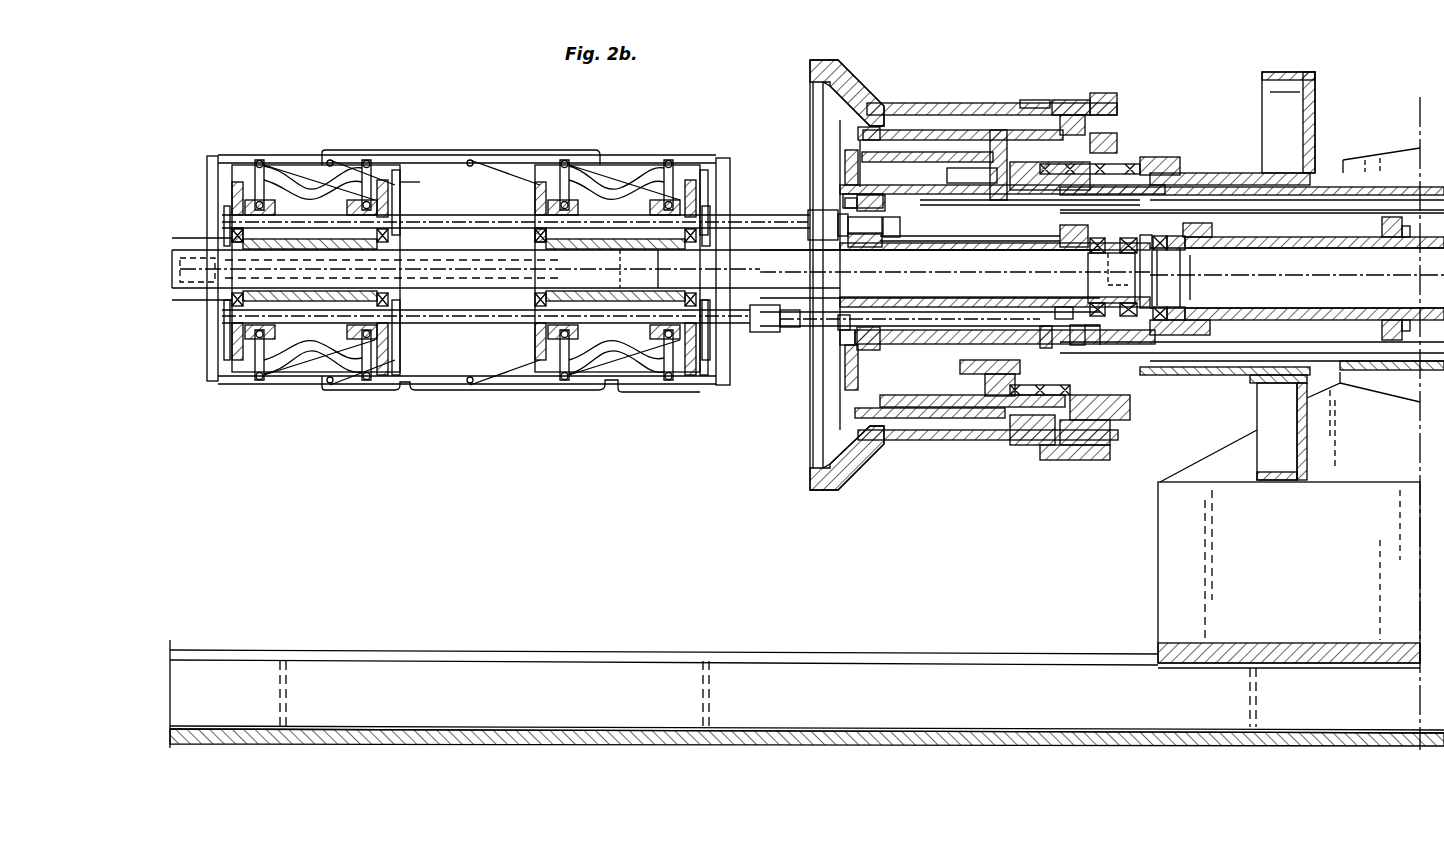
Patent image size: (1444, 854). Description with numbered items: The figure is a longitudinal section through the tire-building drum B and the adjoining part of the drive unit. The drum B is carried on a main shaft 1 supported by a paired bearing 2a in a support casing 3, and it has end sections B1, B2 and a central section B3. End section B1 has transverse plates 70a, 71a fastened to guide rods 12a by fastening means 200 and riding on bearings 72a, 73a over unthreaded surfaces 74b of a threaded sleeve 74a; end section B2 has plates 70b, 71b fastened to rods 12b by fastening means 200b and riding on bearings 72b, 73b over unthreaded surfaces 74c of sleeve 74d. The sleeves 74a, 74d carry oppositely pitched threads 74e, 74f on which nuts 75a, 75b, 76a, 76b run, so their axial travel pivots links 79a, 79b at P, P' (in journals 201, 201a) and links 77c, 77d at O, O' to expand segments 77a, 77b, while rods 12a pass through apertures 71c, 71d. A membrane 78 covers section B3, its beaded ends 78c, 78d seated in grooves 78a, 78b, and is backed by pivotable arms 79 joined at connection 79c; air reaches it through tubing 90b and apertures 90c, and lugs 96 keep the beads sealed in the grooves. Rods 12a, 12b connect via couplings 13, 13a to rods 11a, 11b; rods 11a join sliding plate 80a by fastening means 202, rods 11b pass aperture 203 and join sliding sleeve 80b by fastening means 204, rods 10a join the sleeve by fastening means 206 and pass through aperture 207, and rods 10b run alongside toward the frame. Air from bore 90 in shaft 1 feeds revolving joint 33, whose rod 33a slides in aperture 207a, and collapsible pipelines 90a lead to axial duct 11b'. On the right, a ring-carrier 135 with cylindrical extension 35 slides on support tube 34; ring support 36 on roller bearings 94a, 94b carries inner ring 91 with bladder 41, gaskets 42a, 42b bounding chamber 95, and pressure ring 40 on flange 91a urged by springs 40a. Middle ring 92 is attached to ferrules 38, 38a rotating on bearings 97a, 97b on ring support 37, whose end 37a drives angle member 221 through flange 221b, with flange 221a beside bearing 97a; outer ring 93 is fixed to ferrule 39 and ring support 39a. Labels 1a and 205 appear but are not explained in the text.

The main shaft 1 is at (790, 245).
The shaft end 1a is at (190, 290).
The paired bearing 2a is at (1178, 235).
The support casing 3 is at (1210, 245).
The longitudinal rods 10a is at (900, 205).
The longitudinal rods 10b is at (1210, 375).
The rods 11a is at (862, 248).
The rods 11b is at (955, 274).
The axial duct 11b' is at (930, 293).
The longitudinal guide rods 12a is at (730, 225).
The longitudinal guide rods 12b is at (645, 385).
The coupling 13 is at (812, 205).
The coupling 13a is at (768, 305).
The second revolving joint 33 is at (1147, 235).
The rod 33a is at (1000, 325).
The support tube 34 is at (1323, 173).
The cylindrical extension 35 is at (1257, 392).
The ring support 36 is at (998, 160).
The ring support 37 is at (1117, 140).
The axially inward end 37a is at (1050, 445).
The cylindrical ferrule 38 is at (1060, 100).
The cylindrical ferrule 38a is at (892, 115).
The cylindrical ferrule 39 is at (912, 440).
The ring support 39a is at (1075, 455).
The pressing ring 40 is at (960, 200).
The pressure springs 40a is at (958, 165).
The expandable bladder 41 is at (870, 108).
The annular inflatable gasket 42a is at (1095, 440).
The annular inflatable gasket 42b is at (1090, 420).
The transverse plate 70a is at (255, 382).
The transverse plate 70b is at (560, 386).
The transverse plate 71a is at (392, 376).
The transverse plate 71b is at (694, 376).
The aperture 71c is at (400, 200).
The aperture 71d is at (548, 207).
The bearing 72a is at (232, 240).
The bearing 72b is at (540, 318).
The bearing 73a is at (530, 185).
The bearing 73b is at (708, 300).
The threaded sleeve 74a is at (298, 372).
The unthreaded surfaces 74b is at (195, 238).
The unthreaded surfaces 74c is at (548, 244).
The threaded sleeve 74d is at (668, 305).
The threaded portion 74e is at (585, 305).
The threaded portion 74f is at (635, 305).
The nut 75a is at (276, 205).
The nut 75b is at (348, 165).
The nut 76a is at (590, 206).
The nut 76b is at (800, 180).
The radially expandable segments 77a is at (228, 160).
The radially expandable segments 77b is at (700, 162).
The link 77c is at (310, 170).
The link 77d is at (648, 162).
The membrane 78 is at (548, 152).
The annular bead receiving groove 78a is at (328, 150).
The annular bead receiving groove 78b is at (605, 155).
The marginal end 78c is at (318, 388).
The marginal end 78d is at (634, 392).
The pivotable arms 79 is at (407, 160).
The link 79a is at (250, 160).
The link 79b is at (580, 165).
The pivoting connection 79c is at (478, 385).
The sliding plate 80a is at (860, 358).
The sliding sleeve 80b is at (1068, 307).
The axial bore 90 is at (1343, 262).
The collapsible pipelines 90a is at (1180, 338).
The flexible tubing 90b is at (540, 370).
The apertures 90c is at (556, 372).
The inner cylindrical ring 91 is at (858, 150).
The flange 91a is at (952, 440).
The middle cylindrical ring 92 is at (816, 95).
The outer cylindrical ring 93 is at (812, 490).
The roller bearing 94a is at (1055, 400).
The roller bearing 94b is at (1125, 410).
The annular chamber 95 is at (1100, 93).
The lugs 96 is at (208, 160).
The bearing 97a is at (1035, 100).
The bearing 97b is at (1070, 105).
The ring-carrier 135 is at (1290, 72).
The fastening means 200 is at (228, 215).
The fastening means 200b is at (838, 328).
The journal 201 is at (262, 385).
The journal 201a is at (370, 395).
The fastening means 202 is at (892, 247).
The aperture 203 is at (845, 340).
The fastening means 204 is at (1085, 290).
The bolt 205 is at (845, 203).
The fastening means 206 is at (1045, 325).
The aperture 207 is at (1080, 238).
The aperture 207a is at (1048, 226).
The annular angle member 221 is at (1000, 165).
The flange 221a is at (1008, 160).
The flange 221b is at (990, 400).
The tire-building drum B is at (487, 149).
The end section B1 is at (272, 149).
The end section B2 is at (674, 149).
The central section B3 is at (489, 400).
The pivot joint O is at (298, 134).
The pivot joint O' is at (384, 134).
The pivot joint P is at (295, 179).
The pivot joint P' is at (438, 184).